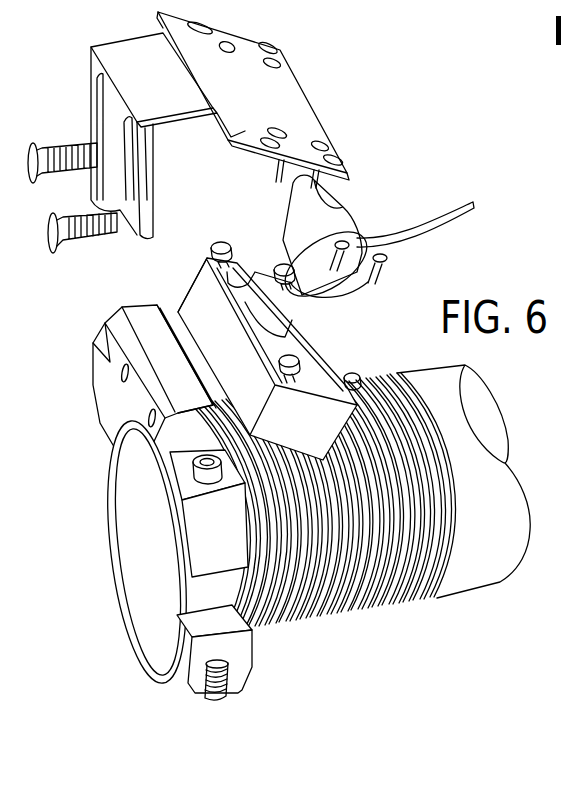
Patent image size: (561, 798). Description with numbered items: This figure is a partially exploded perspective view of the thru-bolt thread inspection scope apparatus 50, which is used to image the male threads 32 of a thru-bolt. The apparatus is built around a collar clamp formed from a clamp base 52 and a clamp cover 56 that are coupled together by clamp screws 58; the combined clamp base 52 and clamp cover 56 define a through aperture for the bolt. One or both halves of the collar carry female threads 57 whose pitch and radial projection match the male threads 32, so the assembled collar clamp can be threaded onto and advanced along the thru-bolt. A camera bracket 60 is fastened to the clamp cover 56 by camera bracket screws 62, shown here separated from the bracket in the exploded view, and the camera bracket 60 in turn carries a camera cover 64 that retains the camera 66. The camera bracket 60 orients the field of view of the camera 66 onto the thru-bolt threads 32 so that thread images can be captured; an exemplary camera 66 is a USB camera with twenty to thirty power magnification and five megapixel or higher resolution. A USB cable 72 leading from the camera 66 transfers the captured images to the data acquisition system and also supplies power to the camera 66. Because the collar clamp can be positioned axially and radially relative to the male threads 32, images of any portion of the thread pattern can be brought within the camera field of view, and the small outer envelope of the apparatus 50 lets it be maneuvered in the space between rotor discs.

The male threads 32 is at (425, 600).
The inspection scope apparatus 50 is at (340, 78).
The clamp base 52 is at (168, 667).
The clamp cover 56 is at (213, 545).
The female threads 57 is at (560, 654).
The clamp screws 58 is at (200, 475).
The camera bracket 60 is at (137, 68).
The camera bracket screws 62 is at (50, 244).
The camera cover 64 is at (317, 333).
The camera 66 is at (328, 217).
The USB cable 72 is at (441, 216).